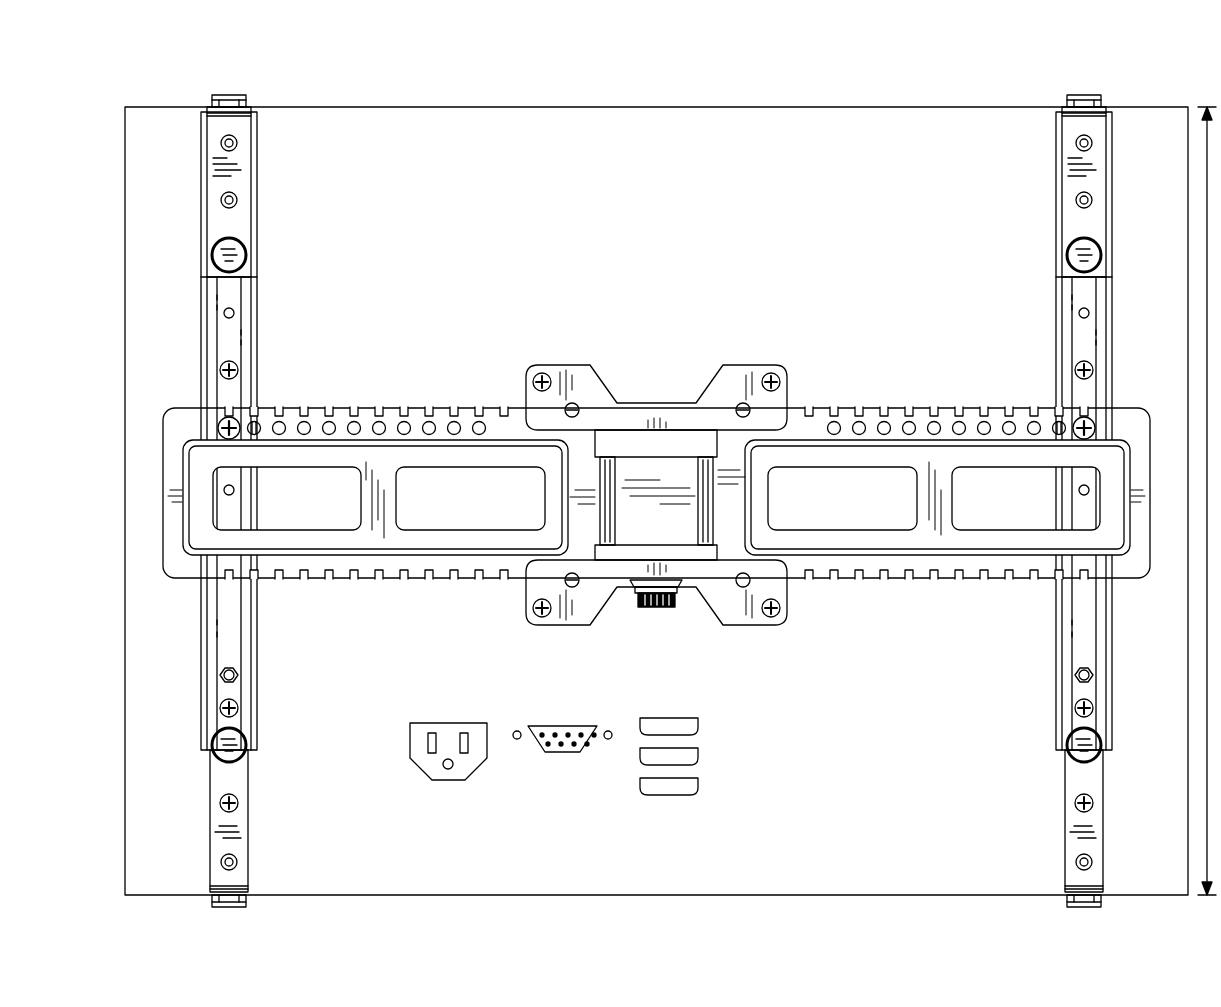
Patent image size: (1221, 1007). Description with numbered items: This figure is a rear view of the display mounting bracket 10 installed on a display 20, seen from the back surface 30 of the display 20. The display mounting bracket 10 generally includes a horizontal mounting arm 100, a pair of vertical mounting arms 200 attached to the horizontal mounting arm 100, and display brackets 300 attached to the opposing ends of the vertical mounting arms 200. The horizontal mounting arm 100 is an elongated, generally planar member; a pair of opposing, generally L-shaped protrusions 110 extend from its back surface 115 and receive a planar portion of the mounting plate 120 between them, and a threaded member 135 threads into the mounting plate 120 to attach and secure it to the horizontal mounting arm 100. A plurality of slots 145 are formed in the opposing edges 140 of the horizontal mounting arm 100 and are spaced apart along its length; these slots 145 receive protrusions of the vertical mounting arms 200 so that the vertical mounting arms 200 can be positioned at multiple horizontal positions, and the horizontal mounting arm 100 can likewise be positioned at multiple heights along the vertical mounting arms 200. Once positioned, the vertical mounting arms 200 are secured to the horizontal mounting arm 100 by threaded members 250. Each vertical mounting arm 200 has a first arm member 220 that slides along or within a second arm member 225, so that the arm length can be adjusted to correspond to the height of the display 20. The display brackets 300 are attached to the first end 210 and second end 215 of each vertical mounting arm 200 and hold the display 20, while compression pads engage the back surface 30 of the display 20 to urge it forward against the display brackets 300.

The display mounting bracket 10 is at (340, 398).
The display 20 is at (405, 105).
The back surface 30 is at (500, 140).
The horizontal mounting arm 100 is at (455, 398).
The protrusions 110 is at (605, 555).
The back surface 115 is at (730, 528).
The mounting plate 120 is at (592, 400).
The threaded member 135 is at (655, 608).
The opposing edges 140 is at (840, 405).
The slots 145 is at (883, 405).
The vertical mounting arms 200 is at (268, 282).
The first end 210 is at (250, 890).
The second end 215 is at (260, 110).
The first arm member 220 is at (243, 772).
The second arm member 225 is at (243, 217).
The threaded members 250 is at (222, 420).
The display brackets 300 is at (229, 88).